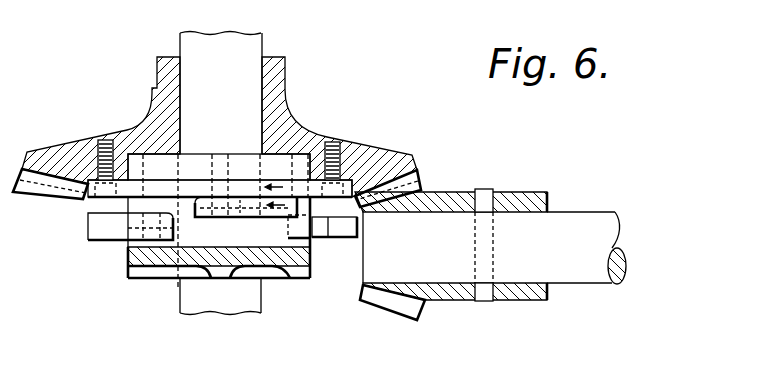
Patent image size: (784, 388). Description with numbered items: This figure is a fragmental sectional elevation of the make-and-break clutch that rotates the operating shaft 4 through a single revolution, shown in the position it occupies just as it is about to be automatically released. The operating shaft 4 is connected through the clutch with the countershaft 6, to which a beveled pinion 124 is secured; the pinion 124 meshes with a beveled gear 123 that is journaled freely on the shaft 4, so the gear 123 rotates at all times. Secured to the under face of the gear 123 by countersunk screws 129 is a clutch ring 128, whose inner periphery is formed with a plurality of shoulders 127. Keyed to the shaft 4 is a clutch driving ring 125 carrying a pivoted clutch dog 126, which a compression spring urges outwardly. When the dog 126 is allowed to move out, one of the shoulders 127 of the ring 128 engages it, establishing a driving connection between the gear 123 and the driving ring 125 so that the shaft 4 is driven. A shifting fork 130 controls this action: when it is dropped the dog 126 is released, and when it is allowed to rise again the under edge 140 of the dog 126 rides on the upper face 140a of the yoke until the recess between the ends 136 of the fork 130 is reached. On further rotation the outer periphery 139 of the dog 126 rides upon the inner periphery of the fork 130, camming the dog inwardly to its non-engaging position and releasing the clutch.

The operating shaft 4 is at (248, 47).
The countershaft 6 is at (583, 272).
The beveled gear 123 is at (413, 160).
The beveled pinion 124 is at (407, 312).
The clutch driving ring 125 is at (275, 163).
The clutch dog 126 is at (218, 203).
The shoulders 127 is at (147, 187).
The clutch ring 128 is at (163, 187).
The countersunk screws 129 is at (97, 157).
The shifting fork 130 is at (357, 242).
The ends of the fork 136 is at (157, 268).
The outer periphery of the dog 139 is at (247, 205).
The under edge of the dog 140 is at (270, 217).
The upper face of the yoke 140a is at (330, 212).